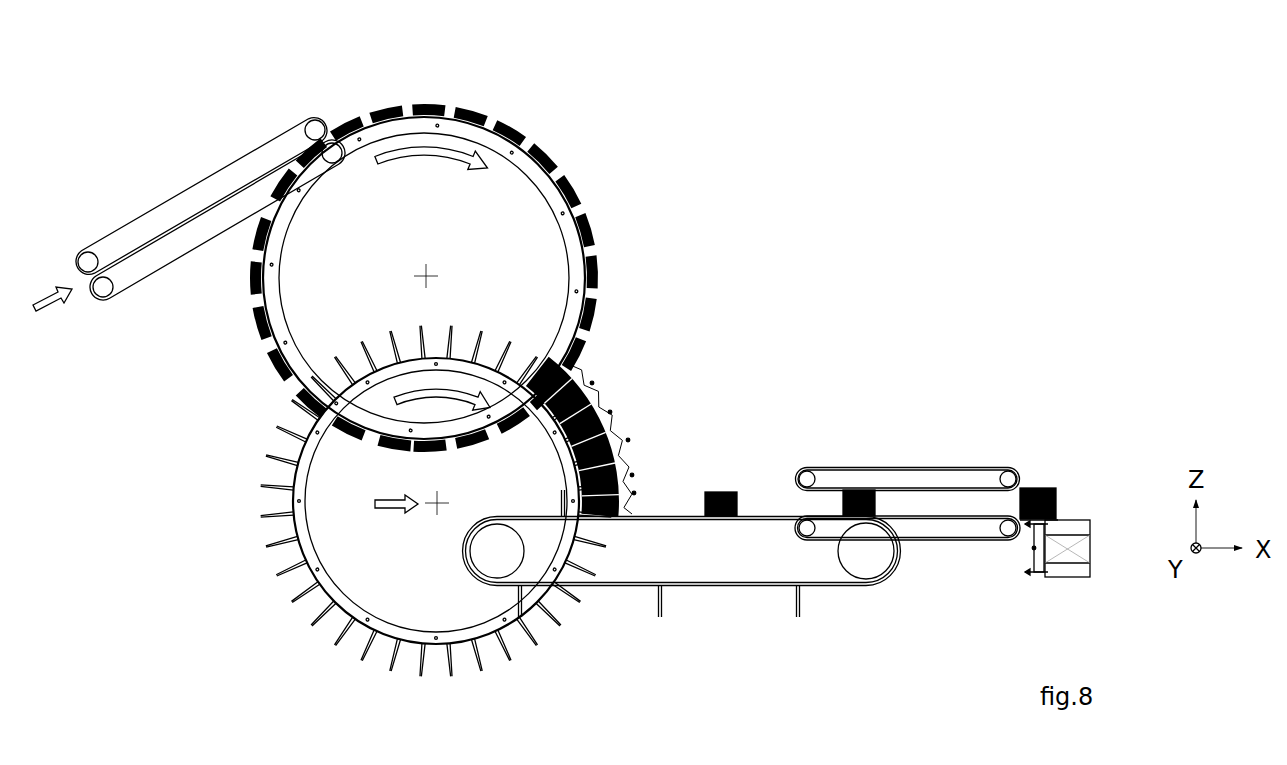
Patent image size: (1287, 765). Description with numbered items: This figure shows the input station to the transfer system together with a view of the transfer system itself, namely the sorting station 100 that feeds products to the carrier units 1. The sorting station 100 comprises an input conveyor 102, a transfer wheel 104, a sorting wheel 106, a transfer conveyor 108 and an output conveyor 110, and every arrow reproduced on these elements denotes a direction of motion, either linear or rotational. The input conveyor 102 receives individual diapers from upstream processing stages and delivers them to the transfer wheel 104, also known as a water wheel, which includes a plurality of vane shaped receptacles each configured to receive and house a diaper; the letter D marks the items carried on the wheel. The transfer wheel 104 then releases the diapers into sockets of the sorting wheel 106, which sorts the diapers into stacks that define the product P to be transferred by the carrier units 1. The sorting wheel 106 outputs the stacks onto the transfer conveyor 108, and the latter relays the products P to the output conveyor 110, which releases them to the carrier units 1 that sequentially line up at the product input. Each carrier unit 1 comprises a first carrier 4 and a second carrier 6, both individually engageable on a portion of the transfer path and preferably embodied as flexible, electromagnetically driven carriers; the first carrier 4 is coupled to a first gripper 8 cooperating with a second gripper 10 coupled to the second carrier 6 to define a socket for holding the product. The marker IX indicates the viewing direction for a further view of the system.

The sorting station 100 is at (741, 290).
The input conveyor 102 is at (172, 190).
The transfer wheel 104 is at (528, 131).
The sorting wheel 106 is at (317, 610).
The transfer conveyor 108 is at (636, 593).
The output conveyor 110 is at (900, 465).
The carrier unit 1 is at (1067, 490).
The first carrier 4 is at (1034, 548).
The second carrier 6 is at (1036, 548).
The first gripper 8 is at (1030, 487).
The second gripper 10 is at (1038, 503).
The dough piece / product D is at (380, 108).
The product P is at (592, 383).
The view direction IX is at (835, 212).